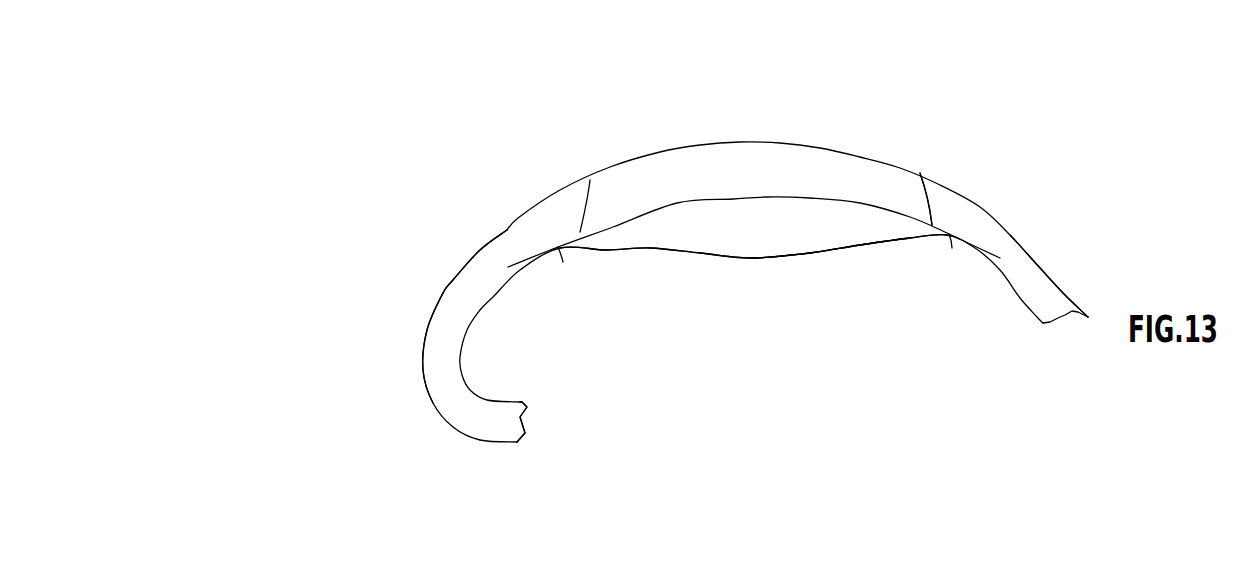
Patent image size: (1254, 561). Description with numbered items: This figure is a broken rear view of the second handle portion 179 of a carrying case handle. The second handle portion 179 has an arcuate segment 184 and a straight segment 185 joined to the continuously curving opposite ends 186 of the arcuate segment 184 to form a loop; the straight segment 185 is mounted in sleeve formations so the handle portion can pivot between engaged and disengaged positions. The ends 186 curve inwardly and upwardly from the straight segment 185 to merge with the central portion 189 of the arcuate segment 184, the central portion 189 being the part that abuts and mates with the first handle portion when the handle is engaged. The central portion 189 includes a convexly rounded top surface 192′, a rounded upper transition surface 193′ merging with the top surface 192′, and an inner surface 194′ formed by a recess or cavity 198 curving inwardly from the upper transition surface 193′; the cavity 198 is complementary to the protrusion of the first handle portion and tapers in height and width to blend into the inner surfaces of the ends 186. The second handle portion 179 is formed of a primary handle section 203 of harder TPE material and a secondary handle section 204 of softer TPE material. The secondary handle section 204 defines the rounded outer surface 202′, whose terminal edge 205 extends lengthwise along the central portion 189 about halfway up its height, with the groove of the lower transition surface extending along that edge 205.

The second handle portion 179 is at (510, 217).
The central portion 189 is at (645, 158).
The upper transition surface 193′ is at (705, 158).
The top surface 192′ is at (742, 140).
The recess or cavity 198 is at (775, 190).
The inner surface 194′ is at (837, 175).
The arcuate segment 184 is at (980, 213).
The ends 186 is at (1050, 278).
The primary handle section 203 is at (443, 302).
The straight segment 185 is at (497, 443).
The arcuately extending edge 205 is at (670, 207).
The outer surface 202′ is at (765, 237).
The secondary handle section 204 is at (848, 238).